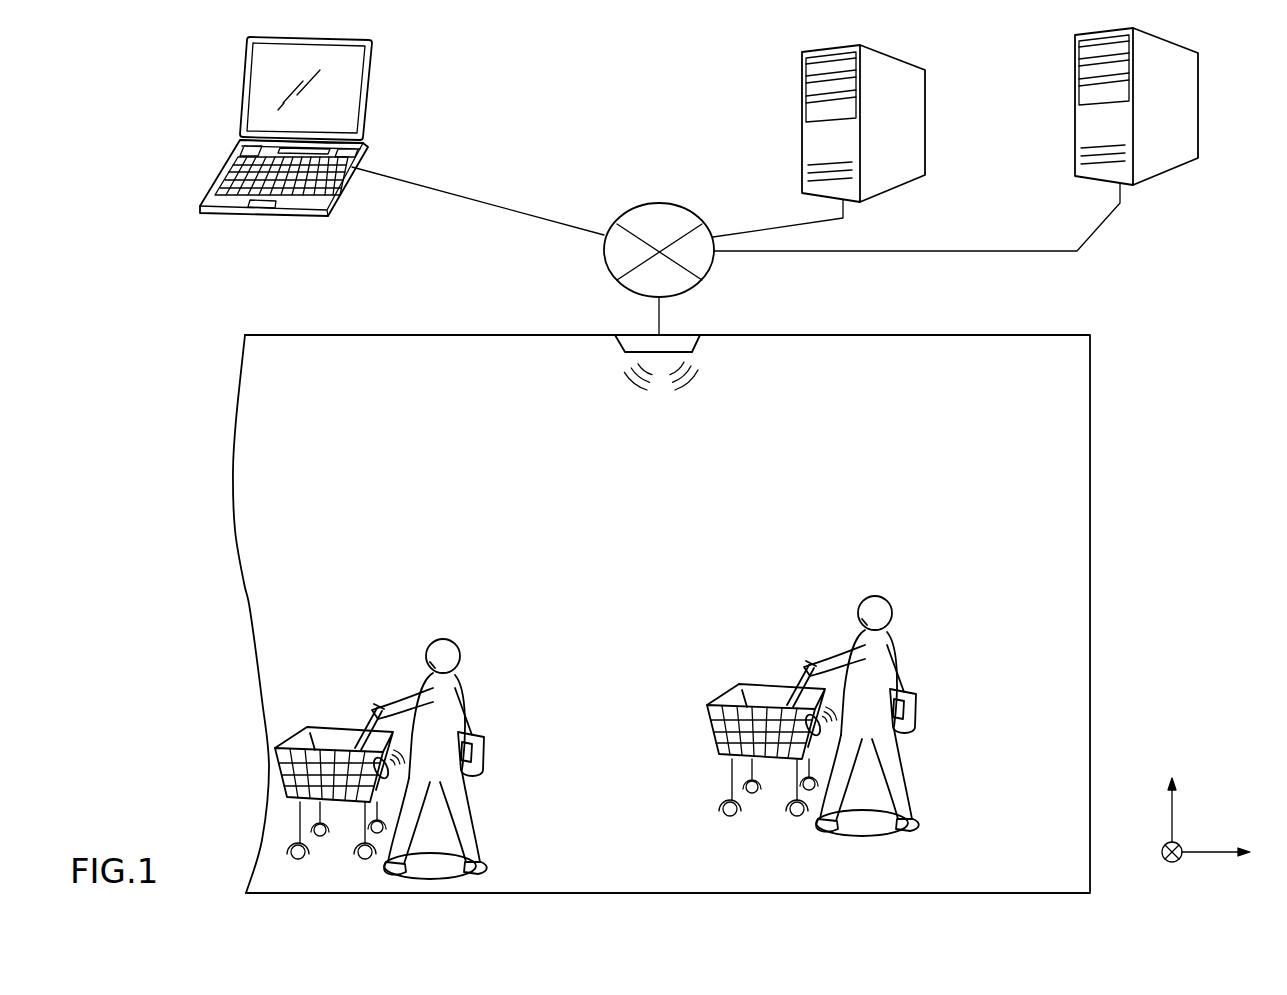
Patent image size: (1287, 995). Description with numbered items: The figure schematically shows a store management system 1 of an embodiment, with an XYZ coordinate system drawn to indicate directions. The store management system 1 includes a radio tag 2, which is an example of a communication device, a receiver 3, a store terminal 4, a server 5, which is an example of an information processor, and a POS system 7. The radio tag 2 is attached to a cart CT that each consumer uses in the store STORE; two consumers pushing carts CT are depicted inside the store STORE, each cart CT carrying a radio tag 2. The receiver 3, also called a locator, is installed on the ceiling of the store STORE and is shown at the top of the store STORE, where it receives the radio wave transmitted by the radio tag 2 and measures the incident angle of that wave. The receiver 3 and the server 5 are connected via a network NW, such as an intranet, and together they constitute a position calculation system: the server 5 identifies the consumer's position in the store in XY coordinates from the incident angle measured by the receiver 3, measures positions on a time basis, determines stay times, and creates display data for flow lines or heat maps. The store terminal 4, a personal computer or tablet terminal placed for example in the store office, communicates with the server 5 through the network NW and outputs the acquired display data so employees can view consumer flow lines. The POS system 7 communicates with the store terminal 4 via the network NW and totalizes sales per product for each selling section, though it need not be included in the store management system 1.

The store management system 1 is at (1190, 439).
The radio tag 2 is at (384, 776).
The receiver 3 is at (700, 345).
The store terminal 4 is at (371, 88).
The server 5 is at (925, 105).
The POS system 7 is at (1198, 88).
The network NW is at (708, 272).
The cart CT is at (297, 740).
The store STORE is at (1090, 641).